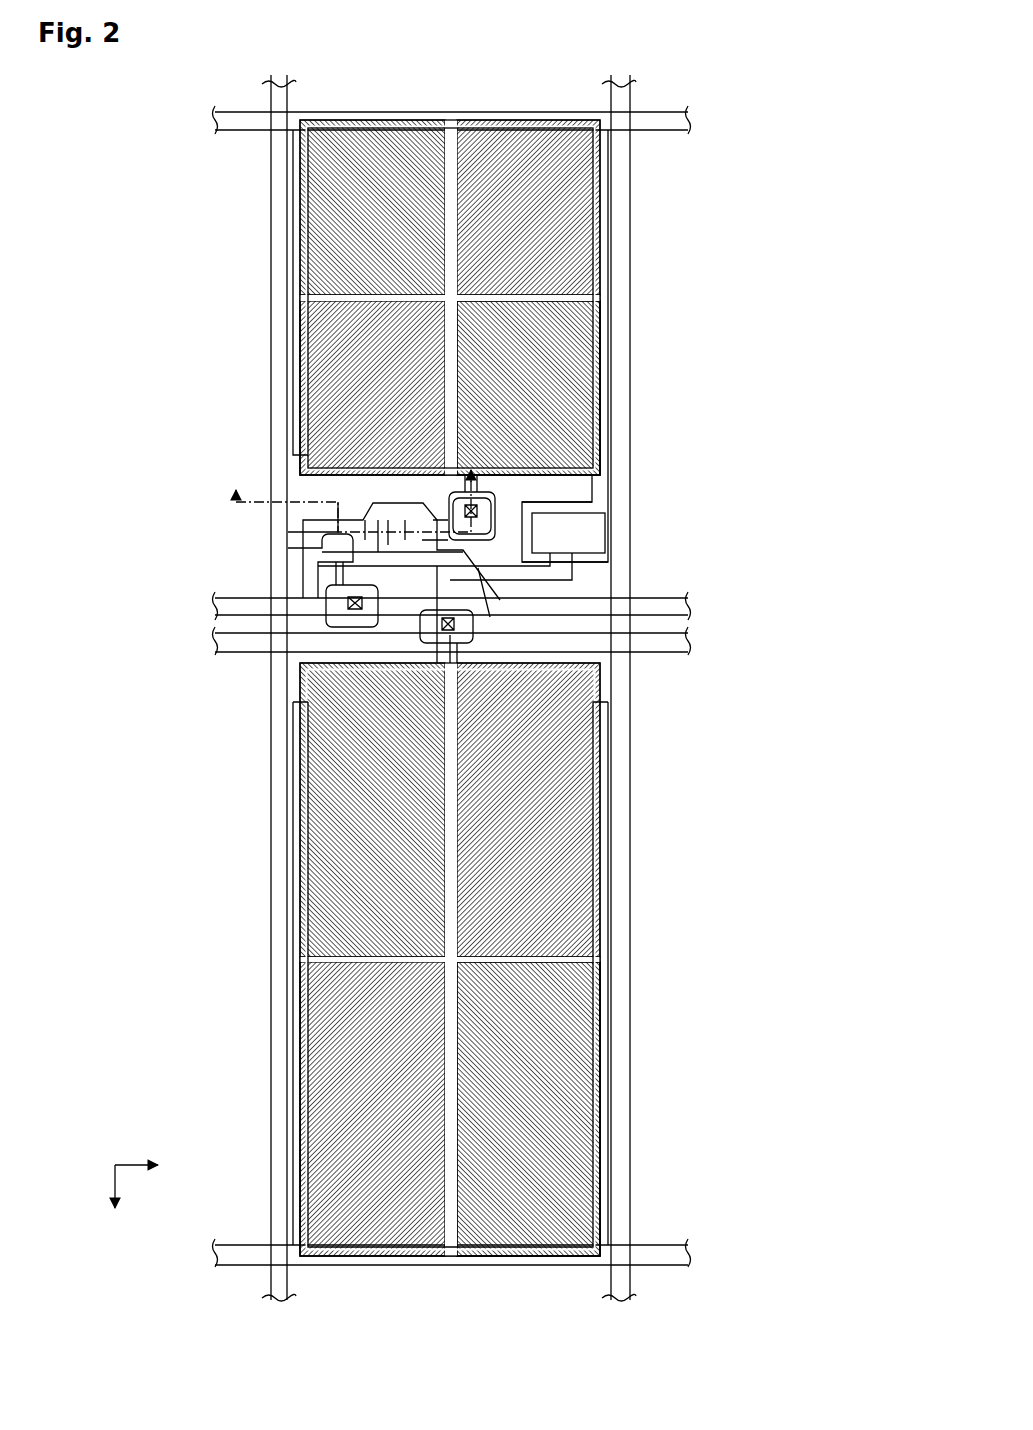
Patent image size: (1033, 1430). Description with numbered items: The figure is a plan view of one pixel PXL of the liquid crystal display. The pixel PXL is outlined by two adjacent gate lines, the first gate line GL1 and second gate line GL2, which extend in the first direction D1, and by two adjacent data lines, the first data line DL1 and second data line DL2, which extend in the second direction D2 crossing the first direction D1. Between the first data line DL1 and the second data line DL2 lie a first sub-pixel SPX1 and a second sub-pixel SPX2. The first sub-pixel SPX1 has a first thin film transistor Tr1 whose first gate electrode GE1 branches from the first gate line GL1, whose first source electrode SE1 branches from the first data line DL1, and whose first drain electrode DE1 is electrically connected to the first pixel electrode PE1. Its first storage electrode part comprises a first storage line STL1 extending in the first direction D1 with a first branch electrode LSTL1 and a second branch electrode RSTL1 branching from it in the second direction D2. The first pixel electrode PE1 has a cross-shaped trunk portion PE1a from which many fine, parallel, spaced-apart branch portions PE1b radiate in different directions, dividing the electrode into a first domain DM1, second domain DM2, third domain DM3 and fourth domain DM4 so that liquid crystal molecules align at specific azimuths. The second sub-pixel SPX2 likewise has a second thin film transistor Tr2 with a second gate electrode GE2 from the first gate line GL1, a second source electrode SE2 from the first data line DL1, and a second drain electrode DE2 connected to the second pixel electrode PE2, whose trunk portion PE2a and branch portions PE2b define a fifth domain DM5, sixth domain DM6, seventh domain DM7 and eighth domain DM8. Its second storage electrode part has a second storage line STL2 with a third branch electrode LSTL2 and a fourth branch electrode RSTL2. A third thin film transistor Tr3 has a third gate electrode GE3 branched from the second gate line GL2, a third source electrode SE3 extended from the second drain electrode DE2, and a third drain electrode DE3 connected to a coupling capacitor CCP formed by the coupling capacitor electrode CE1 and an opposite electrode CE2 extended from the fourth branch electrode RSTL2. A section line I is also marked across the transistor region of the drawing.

The first data line DL1 is at (280, 82).
The second data line DL2 is at (622, 82).
The pixel PXL is at (456, 108).
The first storage line STL1 is at (688, 121).
The second storage line STL2 is at (688, 1254).
The first gate line GL1 is at (216, 608).
The second gate line GL2 is at (216, 644).
The first domain DM1 is at (370, 331).
The second domain DM2 is at (370, 187).
The third domain DM3 is at (540, 187).
The fourth domain DM4 is at (540, 416).
The fifth domain DM5 is at (346, 771).
The sixth domain DM6 is at (540, 756).
The seventh domain DM7 is at (540, 1184).
The eighth domain DM8 is at (370, 1045).
The first pixel electrode PE1 is at (491, 297).
The trunk portion PE1a is at (450, 321).
The branch portions PE1b is at (584, 388).
The second pixel electrode PE2 is at (483, 959).
The trunk portion PE2a is at (450, 1006).
The branch portions PE2b is at (505, 1057).
The first branch electrode LSTL1 is at (292, 245).
The second branch electrode RSTL1 is at (610, 245).
The third branch electrode LSTL2 is at (292, 968).
The fourth branch electrode RSTL2 is at (610, 843).
The first sub-pixel SPX1 is at (766, 280).
The second sub-pixel SPX2 is at (742, 780).
The first thin film transistor Tr1 is at (316, 492).
The second thin film transistor Tr2 is at (352, 564).
The third thin film transistor Tr3 is at (302, 697).
The first gate electrode GE1 is at (412, 514).
The first source electrode SE1 is at (400, 513).
The first drain electrode DE1 is at (372, 508).
The second gate electrode GE2 is at (310, 524).
The second source electrode SE2 is at (324, 558).
The second drain electrode DE2 is at (336, 568).
The third gate electrode GE3 is at (432, 626).
The third source electrode SE3 is at (460, 640).
The third drain electrode DE3 is at (450, 639).
The coupling capacitor electrode CE1 is at (606, 537).
The opposite electrode CE2 is at (608, 502).
The coupling capacitor CCP is at (642, 524).
The section line I-I' I is at (356, 474).
The first direction D1 is at (155, 1165).
The second direction D2 is at (113, 1207).